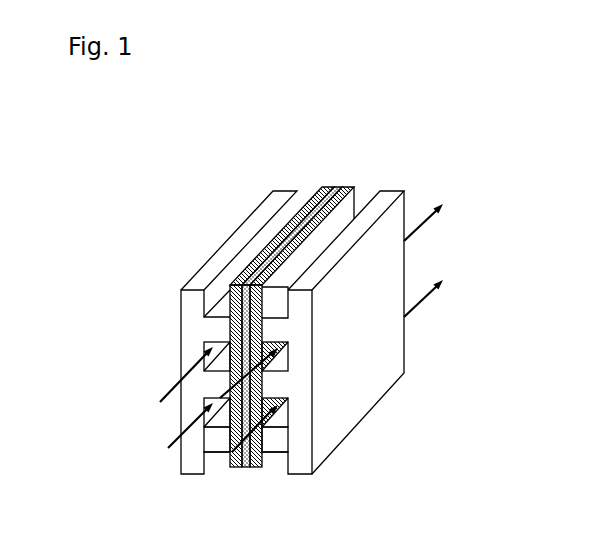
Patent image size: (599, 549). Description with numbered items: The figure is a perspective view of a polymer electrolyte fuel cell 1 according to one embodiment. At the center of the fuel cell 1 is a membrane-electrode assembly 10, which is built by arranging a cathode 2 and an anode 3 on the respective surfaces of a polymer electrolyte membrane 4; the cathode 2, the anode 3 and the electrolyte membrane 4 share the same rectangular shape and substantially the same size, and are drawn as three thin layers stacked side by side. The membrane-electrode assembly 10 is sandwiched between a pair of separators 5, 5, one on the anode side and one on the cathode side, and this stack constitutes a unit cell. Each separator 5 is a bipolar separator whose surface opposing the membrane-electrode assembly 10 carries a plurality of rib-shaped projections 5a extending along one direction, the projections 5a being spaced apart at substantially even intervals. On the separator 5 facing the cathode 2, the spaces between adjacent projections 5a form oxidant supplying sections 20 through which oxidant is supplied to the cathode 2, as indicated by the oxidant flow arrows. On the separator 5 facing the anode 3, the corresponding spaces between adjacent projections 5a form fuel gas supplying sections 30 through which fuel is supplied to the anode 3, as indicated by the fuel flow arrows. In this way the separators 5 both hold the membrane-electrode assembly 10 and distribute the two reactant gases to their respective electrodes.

The polymer electrolyte fuel cell 1 is at (458, 142).
The membrane-electrode assembly 10 is at (305, 144).
The cathode 2 is at (350, 188).
The anode 3 is at (326, 190).
The polymer electrolyte membrane 4 is at (336, 190).
The separator 5 is at (282, 193).
The rib-shaped projection 5a is at (218, 327).
The oxidant supplying section 20 is at (287, 357).
The fuel gas supplying section 30 is at (210, 347).